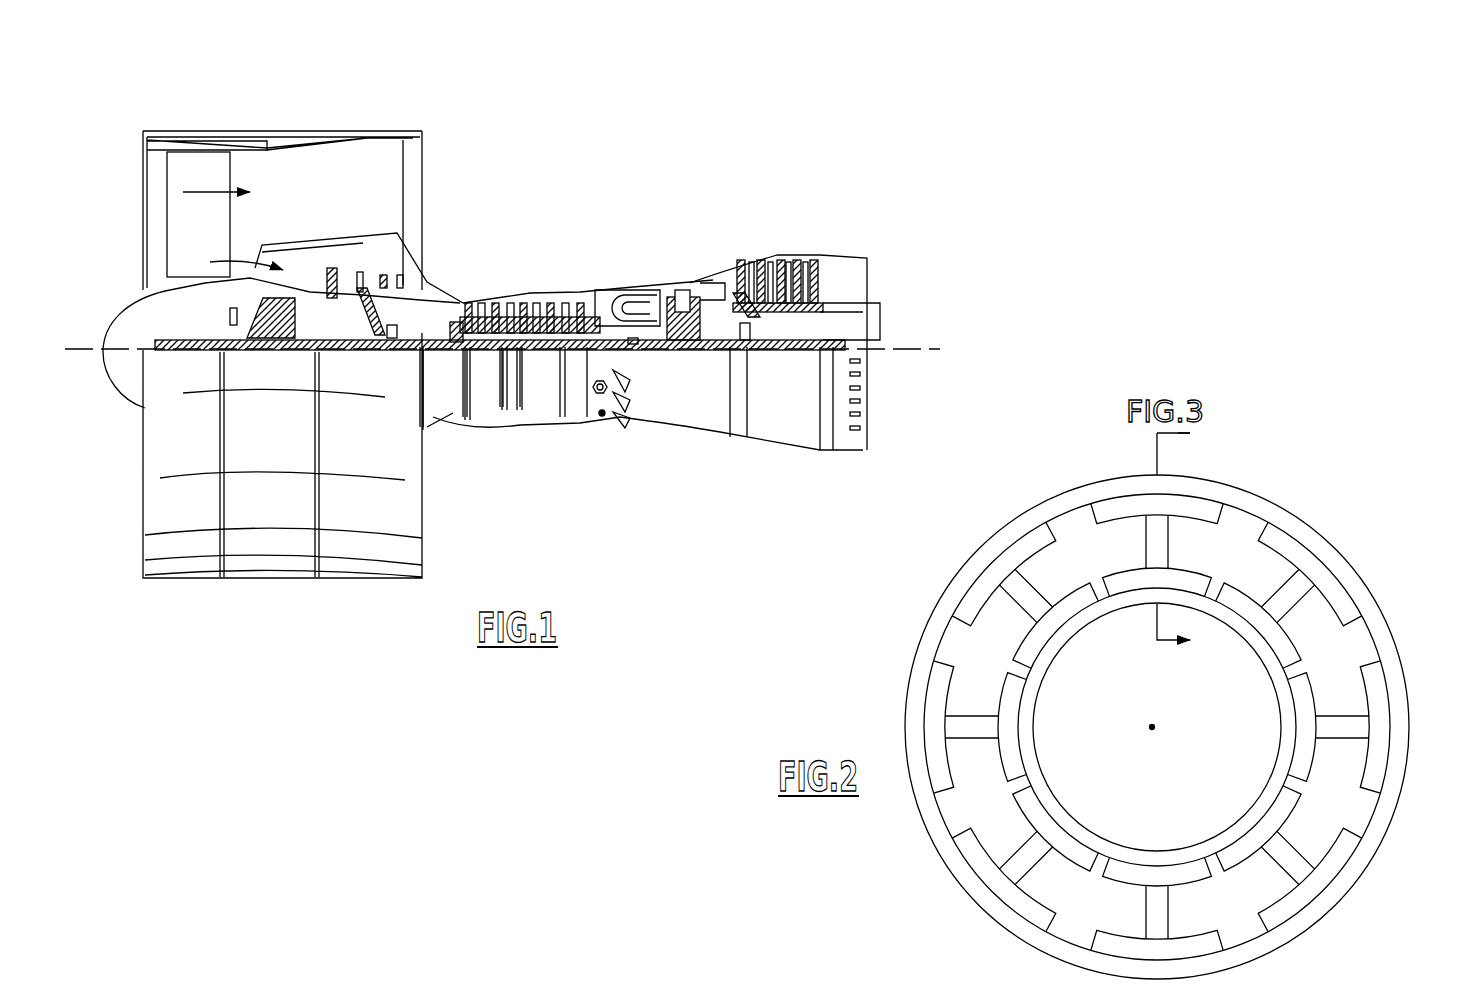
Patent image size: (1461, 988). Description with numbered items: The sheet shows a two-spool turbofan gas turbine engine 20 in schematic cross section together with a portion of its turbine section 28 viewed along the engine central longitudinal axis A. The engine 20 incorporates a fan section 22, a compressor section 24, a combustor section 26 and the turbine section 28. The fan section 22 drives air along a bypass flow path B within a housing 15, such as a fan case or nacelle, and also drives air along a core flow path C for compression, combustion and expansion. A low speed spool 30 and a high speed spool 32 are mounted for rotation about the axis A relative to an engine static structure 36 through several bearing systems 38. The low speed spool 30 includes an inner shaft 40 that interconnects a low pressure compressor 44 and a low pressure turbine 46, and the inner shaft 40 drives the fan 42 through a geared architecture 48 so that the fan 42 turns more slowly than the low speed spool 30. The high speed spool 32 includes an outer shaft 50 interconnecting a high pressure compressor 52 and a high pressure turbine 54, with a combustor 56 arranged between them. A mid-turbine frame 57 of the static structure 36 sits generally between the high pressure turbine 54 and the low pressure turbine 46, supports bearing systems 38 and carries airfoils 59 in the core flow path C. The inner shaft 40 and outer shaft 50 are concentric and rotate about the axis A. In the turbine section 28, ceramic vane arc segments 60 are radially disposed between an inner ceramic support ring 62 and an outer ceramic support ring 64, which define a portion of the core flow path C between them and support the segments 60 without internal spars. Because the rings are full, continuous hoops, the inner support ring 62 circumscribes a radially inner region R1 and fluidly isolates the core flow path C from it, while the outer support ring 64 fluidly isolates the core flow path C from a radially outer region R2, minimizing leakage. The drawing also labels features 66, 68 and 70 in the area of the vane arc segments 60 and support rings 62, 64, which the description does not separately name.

In FIG. 1, the housing 15 is at (283, 131).
In FIG. 1, the gas turbine engine 20 is at (637, 172).
In FIG. 1, the fan section 22 is at (231, 128).
In FIG. 1, the compressor section 24 is at (465, 270).
In FIG. 1, the combustor section 26 is at (632, 268).
In FIG. 1, the turbine section 28 is at (758, 233).
In FIG. 2, the turbine section 28 is at (890, 838).
In FIG. 1, the low speed spool 30 is at (543, 362).
In FIG. 1, the high speed spool 32 is at (580, 300).
In FIG. 1, the engine static structure 36 is at (575, 428).
In FIG. 1, the bearing systems 38 is at (395, 350).
In FIG. 1, the inner shaft 40 is at (438, 418).
In FIG. 1, the fan 42 is at (184, 233).
In FIG. 1, the low pressure compressor 44 is at (350, 282).
In FIG. 1, the low pressure turbine 46 is at (778, 258).
In FIG. 1, the geared architecture 48 is at (290, 350).
In FIG. 1, the outer shaft 50 is at (633, 344).
In FIG. 1, the high pressure compressor 52 is at (524, 300).
In FIG. 1, the high pressure turbine 54 is at (684, 290).
In FIG. 1, the combustor 56 is at (637, 302).
In FIG. 1, the mid-turbine frame 57 is at (716, 276).
In FIG. 1, the airfoils 59 is at (742, 326).
In FIG. 1, the ceramic vane arc segments 60 is at (726, 284).
In FIG. 2, the ceramic vane arc segments 60 is at (1120, 545).
In FIG. 2, the inner support ring 62 is at (1257, 812).
In FIG. 2, the outer support ring 64 is at (1352, 872).
In FIG. 2, the inner annular wall 66 is at (1285, 677).
In FIG. 2, the chamber wall 68 is at (1298, 610).
In FIG. 2, the outer chamber wall 70 is at (1367, 627).
In FIG. 1, the engine central longitudinal axis A is at (940, 348).
In FIG. 2, the engine central longitudinal axis A is at (1155, 729).
In FIG. 1, the bypass flow path B is at (208, 190).
In FIG. 1, the core flow path C is at (235, 258).
In FIG. 2, the core flow path C is at (963, 666).
In FIG. 2, the radially inner region R1 is at (1098, 751).
In FIG. 2, the radially outer region R2 is at (923, 570).